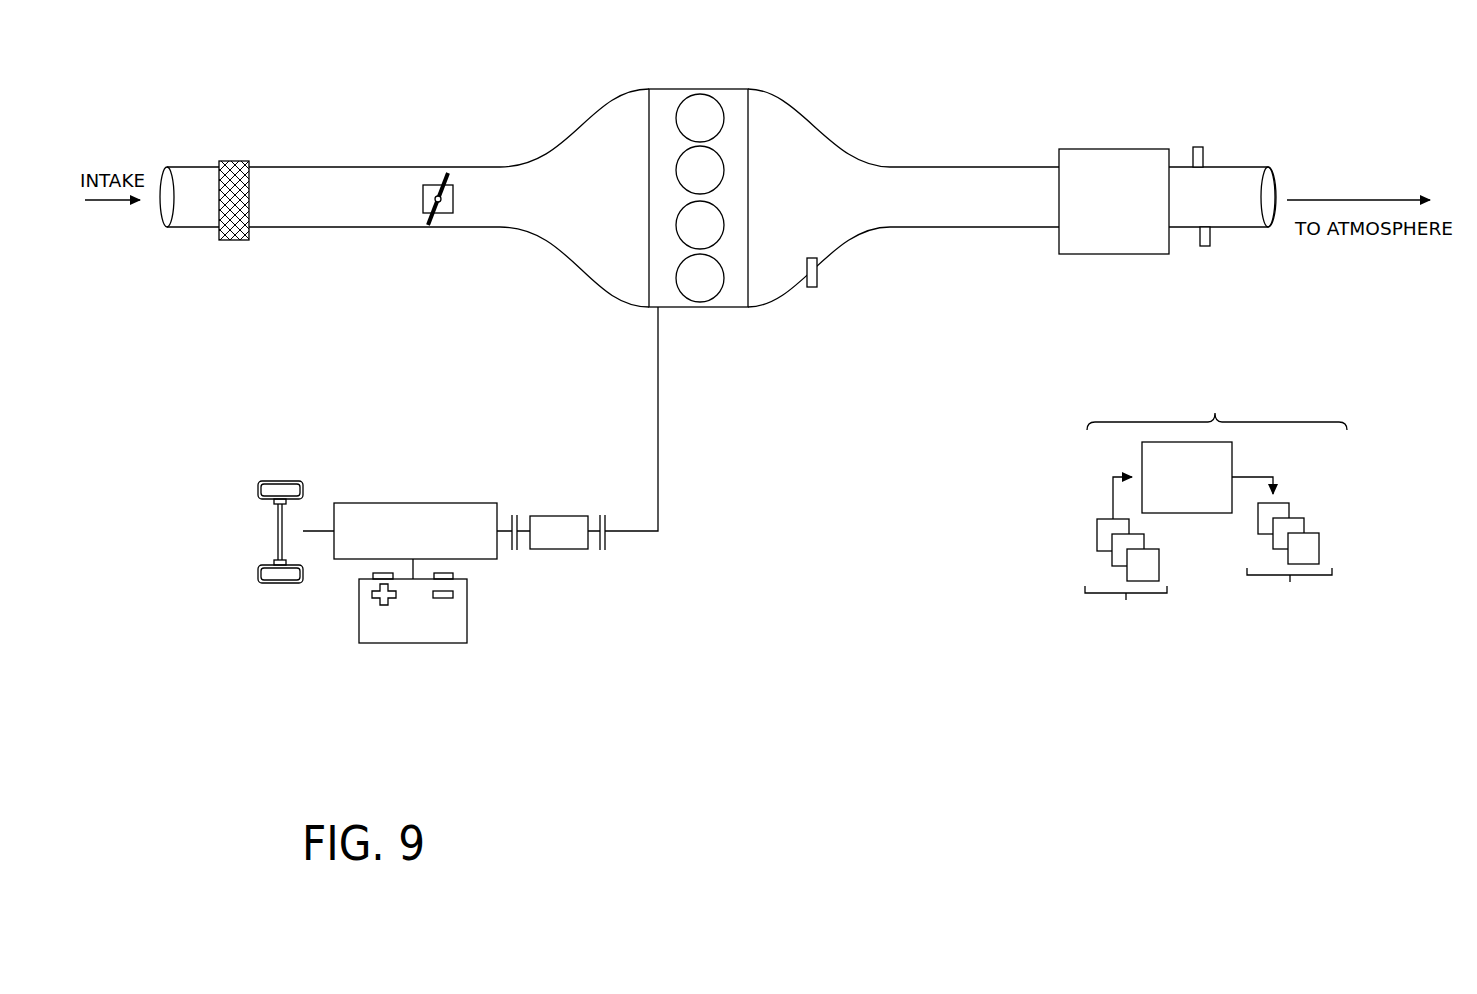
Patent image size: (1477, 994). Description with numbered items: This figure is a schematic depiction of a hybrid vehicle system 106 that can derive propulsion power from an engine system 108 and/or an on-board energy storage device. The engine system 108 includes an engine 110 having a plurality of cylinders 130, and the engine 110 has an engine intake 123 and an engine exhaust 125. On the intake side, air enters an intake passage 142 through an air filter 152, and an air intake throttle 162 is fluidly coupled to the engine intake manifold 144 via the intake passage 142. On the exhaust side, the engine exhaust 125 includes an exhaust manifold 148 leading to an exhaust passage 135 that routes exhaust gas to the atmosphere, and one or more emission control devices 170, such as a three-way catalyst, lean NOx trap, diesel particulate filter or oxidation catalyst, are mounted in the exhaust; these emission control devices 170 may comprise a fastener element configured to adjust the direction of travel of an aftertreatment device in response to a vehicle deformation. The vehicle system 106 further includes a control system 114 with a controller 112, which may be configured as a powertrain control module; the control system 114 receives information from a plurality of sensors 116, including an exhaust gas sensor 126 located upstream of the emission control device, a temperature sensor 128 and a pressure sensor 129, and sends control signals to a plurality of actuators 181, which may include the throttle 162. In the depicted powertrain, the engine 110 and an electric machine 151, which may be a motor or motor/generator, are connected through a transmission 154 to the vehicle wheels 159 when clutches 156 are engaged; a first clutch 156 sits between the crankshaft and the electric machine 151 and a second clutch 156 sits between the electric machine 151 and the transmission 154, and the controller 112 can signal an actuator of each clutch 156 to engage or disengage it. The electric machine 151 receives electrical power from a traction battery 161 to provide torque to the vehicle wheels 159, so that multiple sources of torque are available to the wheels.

The hybrid vehicle system 106 is at (183, 64).
The engine system 108 is at (1308, 62).
The engine 110 is at (750, 178).
The controller 112 is at (1187, 477).
The control system 114 is at (1216, 507).
The sensors 116 is at (1126, 561).
The engine intake 123 is at (572, 110).
The engine exhaust 125 is at (867, 126).
The exhaust gas sensor 126 is at (817, 267).
The temperature sensor 128 is at (1206, 246).
The pressure sensor 129 is at (1199, 147).
The cylinders 130 is at (726, 110).
The exhaust passage 135 is at (1258, 167).
The intake passage 142 is at (198, 228).
The engine intake manifold 144 is at (621, 209).
The exhaust manifold 148 is at (844, 209).
The electric machine 151 is at (561, 551).
The air filter 152 is at (236, 161).
The transmission 154 is at (356, 560).
The clutches 156 is at (519, 518).
The vehicle wheels 159 is at (278, 584).
The traction battery 161 is at (417, 644).
The air intake throttle 162 is at (453, 206).
The emission control devices 170 is at (1104, 150).
The actuators 181 is at (1282, 551).